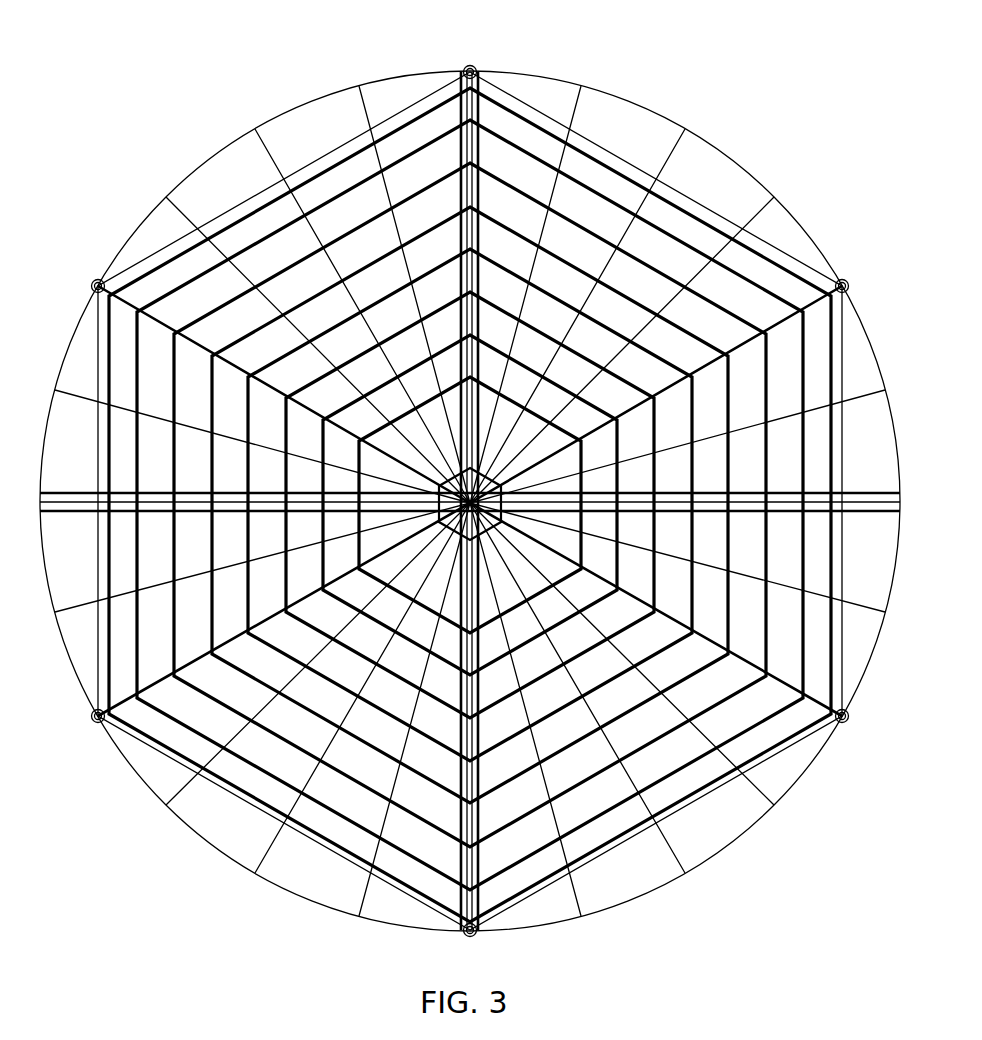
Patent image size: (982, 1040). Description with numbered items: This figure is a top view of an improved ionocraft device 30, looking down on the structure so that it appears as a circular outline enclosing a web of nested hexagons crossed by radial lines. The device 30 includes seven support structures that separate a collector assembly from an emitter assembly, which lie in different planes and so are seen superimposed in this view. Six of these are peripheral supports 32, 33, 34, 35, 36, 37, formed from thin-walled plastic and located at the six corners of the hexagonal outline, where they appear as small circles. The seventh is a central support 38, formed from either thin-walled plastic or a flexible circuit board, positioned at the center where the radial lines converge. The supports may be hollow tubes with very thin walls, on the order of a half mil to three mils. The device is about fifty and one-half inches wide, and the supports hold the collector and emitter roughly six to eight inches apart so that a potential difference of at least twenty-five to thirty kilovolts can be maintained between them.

The improved ionocraft 30 is at (836, 64).
The peripheral support 32 is at (92, 710).
The peripheral support 33 is at (92, 280).
The peripheral support 34 is at (477, 68).
The peripheral support 35 is at (849, 285).
The peripheral support 36 is at (850, 718).
The peripheral support 37 is at (478, 935).
The central support 38 is at (447, 478).